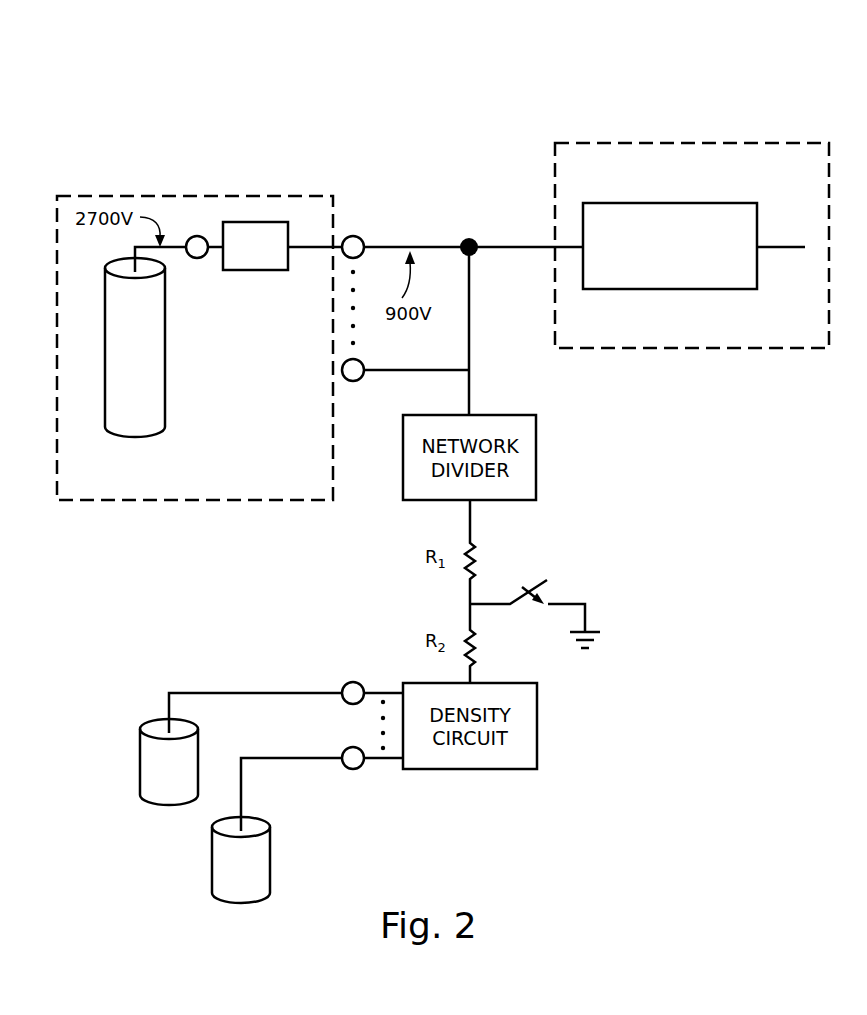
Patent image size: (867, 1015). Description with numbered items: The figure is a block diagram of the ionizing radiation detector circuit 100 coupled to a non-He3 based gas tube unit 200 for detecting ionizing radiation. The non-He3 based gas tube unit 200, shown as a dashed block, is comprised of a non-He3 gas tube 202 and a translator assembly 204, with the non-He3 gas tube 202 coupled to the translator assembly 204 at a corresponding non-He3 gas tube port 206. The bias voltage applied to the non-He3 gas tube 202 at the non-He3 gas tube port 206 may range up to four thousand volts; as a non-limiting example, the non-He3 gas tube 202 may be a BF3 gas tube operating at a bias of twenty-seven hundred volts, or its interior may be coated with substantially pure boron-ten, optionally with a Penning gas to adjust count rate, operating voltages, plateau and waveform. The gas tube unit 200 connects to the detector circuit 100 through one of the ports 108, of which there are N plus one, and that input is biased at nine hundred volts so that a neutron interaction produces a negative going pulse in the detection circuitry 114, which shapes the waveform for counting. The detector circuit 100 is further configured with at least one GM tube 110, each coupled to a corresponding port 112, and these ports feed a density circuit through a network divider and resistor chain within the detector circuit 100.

The ionizing radiation detector circuit 100 is at (653, 92).
The non-He3 based gas tube unit 200 is at (110, 196).
The non-He3 gas tube 202 is at (165, 340).
The translator assembly 204 is at (257, 222).
The non-He3 gas tube port 206 is at (197, 258).
The port 108 is at (355, 237).
The port 112 is at (365, 684).
The GM tube 110 is at (141, 755).
The detection circuitry 114 is at (668, 349).